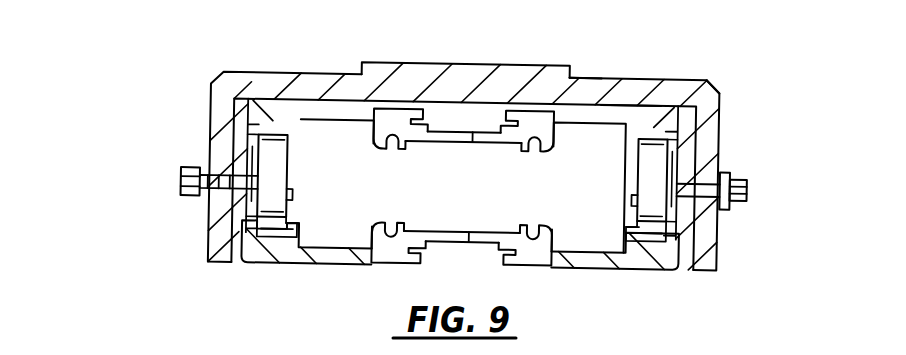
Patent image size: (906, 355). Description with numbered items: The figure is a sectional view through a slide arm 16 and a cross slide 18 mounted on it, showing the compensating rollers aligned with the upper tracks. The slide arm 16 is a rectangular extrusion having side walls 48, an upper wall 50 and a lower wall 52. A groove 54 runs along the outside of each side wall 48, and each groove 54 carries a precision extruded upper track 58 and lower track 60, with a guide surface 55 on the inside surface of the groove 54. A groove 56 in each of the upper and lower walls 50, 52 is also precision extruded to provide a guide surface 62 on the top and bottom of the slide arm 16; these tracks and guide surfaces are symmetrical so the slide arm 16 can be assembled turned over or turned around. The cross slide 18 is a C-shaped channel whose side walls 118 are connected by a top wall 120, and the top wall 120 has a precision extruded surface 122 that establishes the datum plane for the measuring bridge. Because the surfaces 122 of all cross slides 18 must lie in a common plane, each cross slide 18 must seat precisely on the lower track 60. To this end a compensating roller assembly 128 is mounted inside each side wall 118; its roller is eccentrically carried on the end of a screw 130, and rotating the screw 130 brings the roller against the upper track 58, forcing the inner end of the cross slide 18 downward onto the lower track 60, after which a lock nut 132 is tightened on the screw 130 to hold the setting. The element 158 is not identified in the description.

The slide arm 16 is at (628, 98).
The cross slide 18 is at (712, 77).
The side walls 48 is at (301, 178).
The upper wall 50 is at (510, 144).
The lower wall 52 is at (476, 231).
The groove 54 is at (290, 225).
The guide surface 55 is at (291, 199).
The groove 56 is at (421, 141).
The upper track 58 is at (290, 146).
The lower track 60 is at (250, 225).
The guide surface 62 is at (476, 133).
The side walls 118 is at (209, 127).
The top wall 120 is at (598, 76).
The precision extruded surface 122 is at (458, 63).
The compensating roller assembly 128 is at (290, 162).
The screw 130 is at (188, 174).
The lock nut 132 is at (186, 202).
The end plate 158 is at (680, 140).